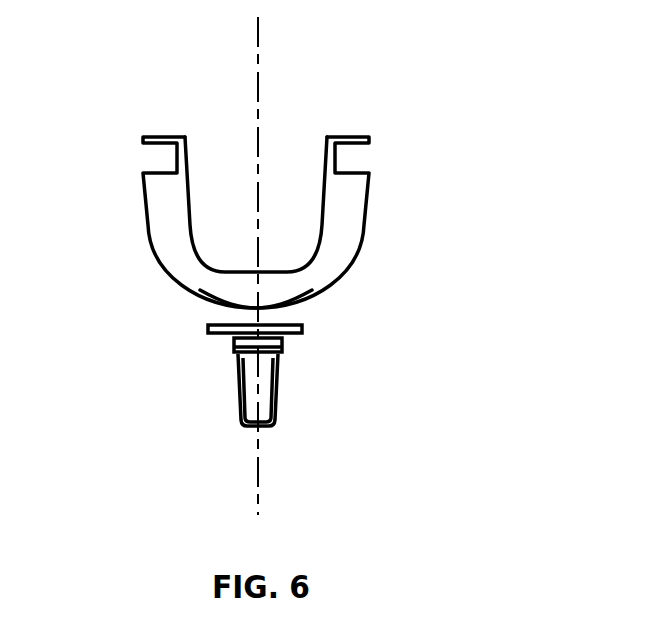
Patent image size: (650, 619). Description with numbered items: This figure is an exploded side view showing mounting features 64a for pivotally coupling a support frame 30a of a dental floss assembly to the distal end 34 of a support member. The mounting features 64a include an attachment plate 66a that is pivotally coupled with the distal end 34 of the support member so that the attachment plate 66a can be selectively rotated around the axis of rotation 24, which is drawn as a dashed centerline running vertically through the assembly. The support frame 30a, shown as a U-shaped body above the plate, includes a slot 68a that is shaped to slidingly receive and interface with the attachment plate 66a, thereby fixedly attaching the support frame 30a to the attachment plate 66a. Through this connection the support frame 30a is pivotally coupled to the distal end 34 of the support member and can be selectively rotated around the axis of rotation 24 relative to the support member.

The support frame 30a is at (452, 204).
The slot 68a is at (298, 305).
The mounting features 64a is at (187, 323).
The attachment plate 66a is at (301, 329).
The distal end 34 is at (225, 395).
The axis of rotation 24 is at (258, 490).